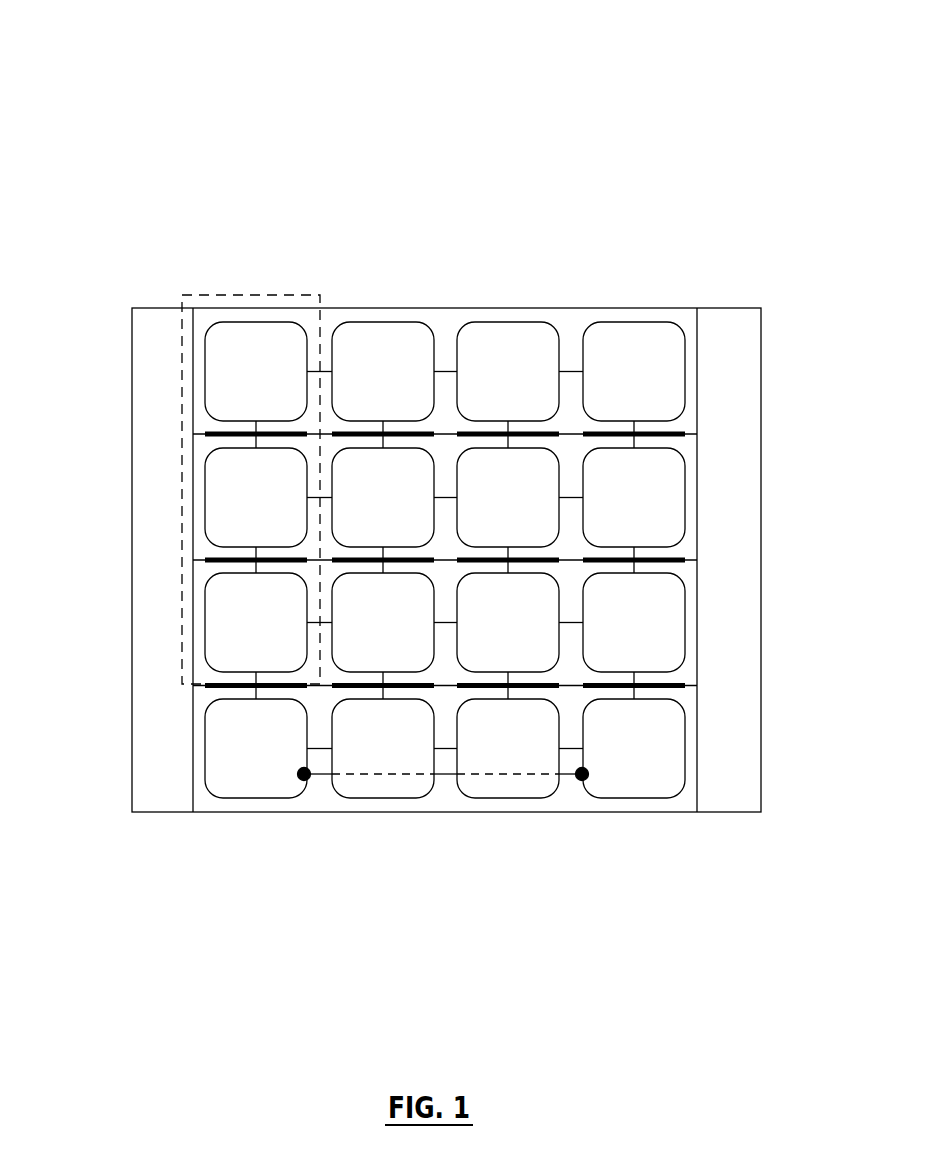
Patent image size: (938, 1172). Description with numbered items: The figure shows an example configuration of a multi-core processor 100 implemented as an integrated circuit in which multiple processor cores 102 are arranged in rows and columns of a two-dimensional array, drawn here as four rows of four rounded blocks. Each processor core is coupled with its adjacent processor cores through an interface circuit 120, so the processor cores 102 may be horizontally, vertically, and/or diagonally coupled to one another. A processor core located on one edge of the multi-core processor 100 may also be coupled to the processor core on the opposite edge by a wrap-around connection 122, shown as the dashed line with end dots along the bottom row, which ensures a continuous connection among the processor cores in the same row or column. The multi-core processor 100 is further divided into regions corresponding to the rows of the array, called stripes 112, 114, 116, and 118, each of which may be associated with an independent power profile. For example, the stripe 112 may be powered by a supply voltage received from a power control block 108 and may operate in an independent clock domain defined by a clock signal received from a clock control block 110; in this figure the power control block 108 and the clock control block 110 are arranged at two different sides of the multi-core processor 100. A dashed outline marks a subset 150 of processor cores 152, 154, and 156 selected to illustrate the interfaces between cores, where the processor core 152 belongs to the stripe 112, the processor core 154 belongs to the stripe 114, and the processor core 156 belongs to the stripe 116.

The multi-core processor 100 is at (148, 48).
The processor cores 102 is at (497, 447).
The power control block 108 is at (747, 662).
The clock control block 110 is at (133, 560).
The stripe 112 is at (193, 359).
The stripe 114 is at (193, 473).
The stripe 116 is at (193, 635).
The stripe 118 is at (193, 760).
The interface circuit 120 is at (571, 371).
The wrap-around connection 122 is at (443, 776).
The subset 150 is at (257, 295).
The processor core 152 is at (256, 371).
The processor core 154 is at (256, 497).
The processor core 156 is at (256, 622).